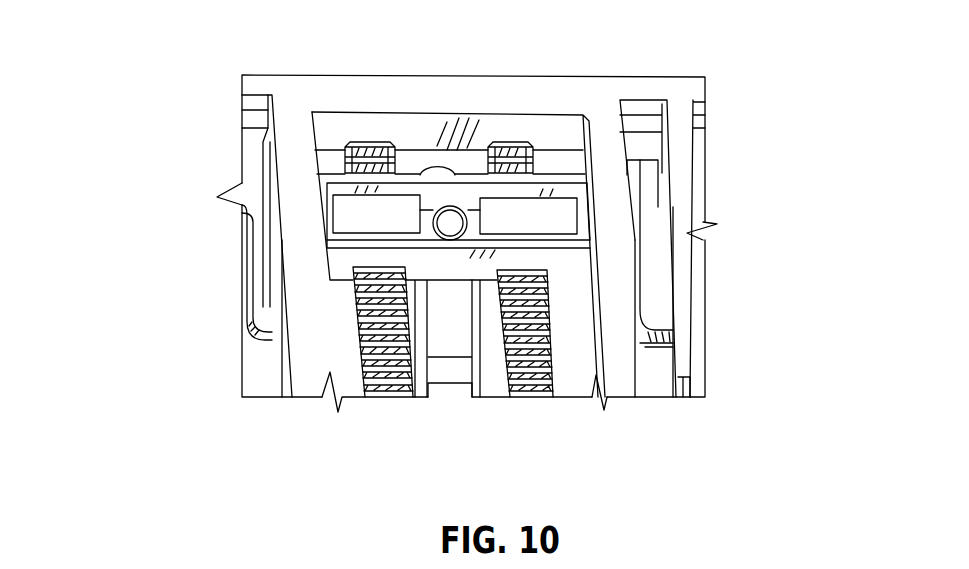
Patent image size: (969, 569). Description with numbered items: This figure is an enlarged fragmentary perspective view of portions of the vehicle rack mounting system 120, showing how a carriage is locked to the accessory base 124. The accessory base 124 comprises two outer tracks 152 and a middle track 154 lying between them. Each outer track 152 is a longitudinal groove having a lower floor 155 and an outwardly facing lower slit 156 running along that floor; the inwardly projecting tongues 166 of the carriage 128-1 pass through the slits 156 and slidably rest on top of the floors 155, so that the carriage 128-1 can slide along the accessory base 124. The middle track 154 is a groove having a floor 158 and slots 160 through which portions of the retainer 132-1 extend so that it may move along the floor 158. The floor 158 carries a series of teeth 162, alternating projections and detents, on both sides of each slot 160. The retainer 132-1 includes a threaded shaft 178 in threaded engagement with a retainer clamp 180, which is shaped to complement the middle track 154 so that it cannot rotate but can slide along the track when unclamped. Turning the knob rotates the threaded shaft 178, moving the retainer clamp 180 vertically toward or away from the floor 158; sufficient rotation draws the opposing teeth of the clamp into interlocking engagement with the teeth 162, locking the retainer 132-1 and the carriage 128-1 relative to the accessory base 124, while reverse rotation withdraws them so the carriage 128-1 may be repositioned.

The vehicle rack mounting system 120 is at (141, 172).
The accessory base 124 is at (691, 78).
The carriage 128-1 is at (462, 354).
The retainer 132-1 is at (591, 175).
The outer tracks 152 is at (258, 158).
The middle track 154 is at (328, 297).
The lower floor 155 is at (240, 382).
The lower slit 156 is at (687, 382).
The floor 158 is at (340, 370).
The slots 160 is at (428, 387).
The teeth 162 is at (367, 340).
The tongues 166 is at (253, 303).
The threaded shaft 178 is at (451, 223).
The retainer clamp 180 is at (583, 217).